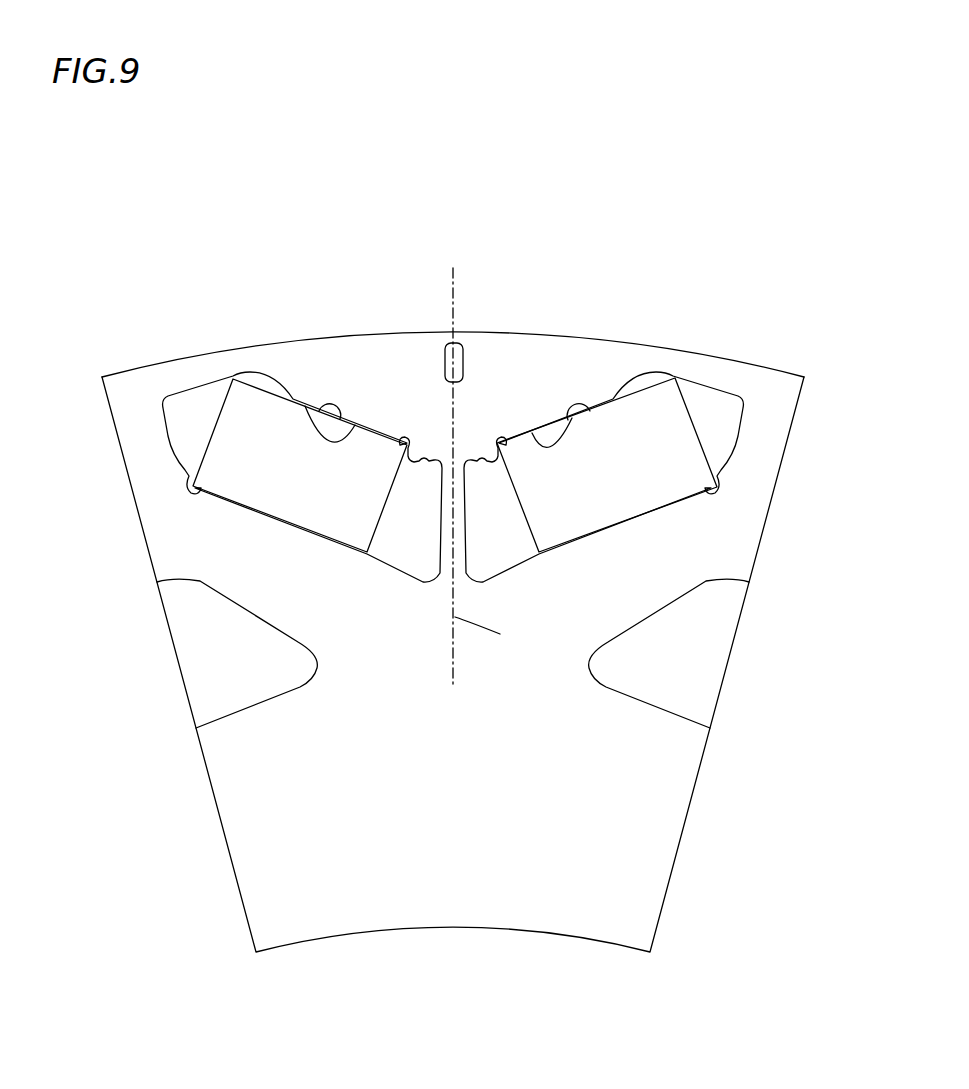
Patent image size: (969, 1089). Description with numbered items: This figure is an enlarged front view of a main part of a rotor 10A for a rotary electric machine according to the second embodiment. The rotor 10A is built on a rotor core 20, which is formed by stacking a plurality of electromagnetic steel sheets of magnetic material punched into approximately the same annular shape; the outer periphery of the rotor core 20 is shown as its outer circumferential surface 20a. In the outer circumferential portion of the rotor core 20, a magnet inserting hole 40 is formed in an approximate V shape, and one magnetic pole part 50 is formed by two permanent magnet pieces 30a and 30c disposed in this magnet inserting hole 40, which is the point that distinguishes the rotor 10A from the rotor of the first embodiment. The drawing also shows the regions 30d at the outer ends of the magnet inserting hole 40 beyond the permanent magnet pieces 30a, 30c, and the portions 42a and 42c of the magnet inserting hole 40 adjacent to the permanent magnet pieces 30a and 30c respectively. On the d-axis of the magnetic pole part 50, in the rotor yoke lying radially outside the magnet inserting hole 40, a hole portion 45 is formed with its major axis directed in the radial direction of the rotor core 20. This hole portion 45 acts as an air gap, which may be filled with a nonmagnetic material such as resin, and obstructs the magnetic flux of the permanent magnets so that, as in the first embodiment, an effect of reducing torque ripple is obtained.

The rotor 10A is at (744, 226).
The rotor core 20 is at (453, 324).
The outer peripheral surface of rotor core 20a is at (757, 366).
The permanent magnet piece 30a is at (245, 485).
The permanent magnet piece 30c is at (650, 490).
The flux barrier 30d is at (195, 465).
The magnet inserting hole 40 is at (447, 282).
The protrusion of magnet insertion hole 42a is at (305, 406).
The protrusion of magnet insertion hole 42c is at (570, 417).
The hole portion 45 is at (435, 347).
The magnetic pole part 50 is at (581, 322).